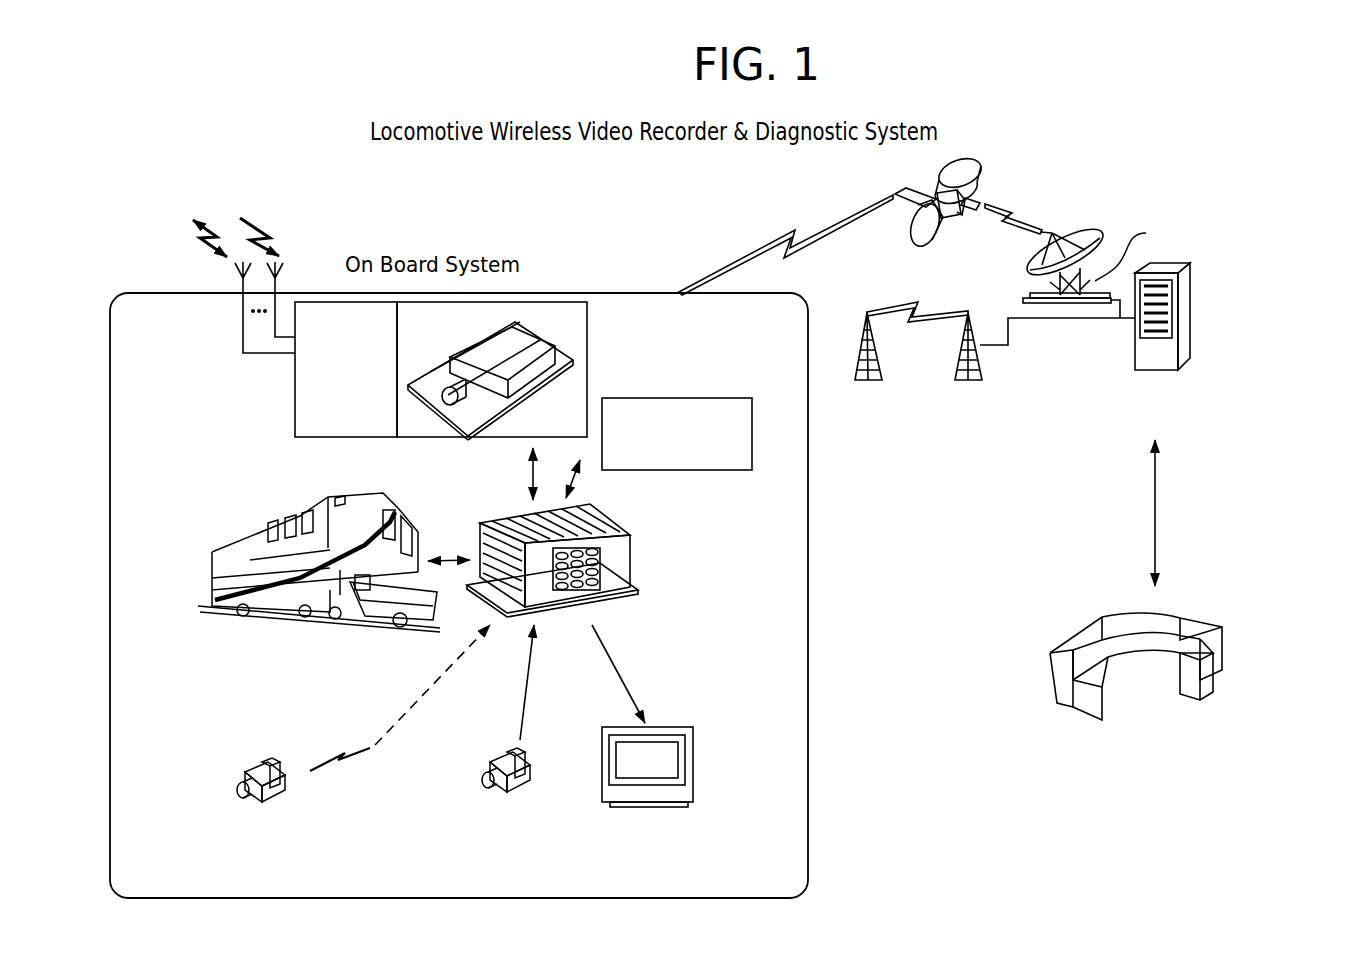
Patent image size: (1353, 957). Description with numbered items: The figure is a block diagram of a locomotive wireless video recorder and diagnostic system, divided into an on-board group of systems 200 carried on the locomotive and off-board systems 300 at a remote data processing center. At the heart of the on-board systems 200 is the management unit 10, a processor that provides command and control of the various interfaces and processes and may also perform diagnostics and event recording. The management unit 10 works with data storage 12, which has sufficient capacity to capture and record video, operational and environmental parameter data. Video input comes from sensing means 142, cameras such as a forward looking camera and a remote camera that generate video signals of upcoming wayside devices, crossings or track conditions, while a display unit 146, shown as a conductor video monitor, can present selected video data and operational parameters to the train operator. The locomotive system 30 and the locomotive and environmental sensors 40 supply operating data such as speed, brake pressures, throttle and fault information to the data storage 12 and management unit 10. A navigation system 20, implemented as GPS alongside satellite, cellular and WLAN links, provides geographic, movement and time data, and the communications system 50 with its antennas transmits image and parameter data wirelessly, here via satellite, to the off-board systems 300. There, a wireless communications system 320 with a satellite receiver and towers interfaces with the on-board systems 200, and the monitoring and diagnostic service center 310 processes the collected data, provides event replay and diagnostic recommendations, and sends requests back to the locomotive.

The management unit 10 is at (632, 579).
The data storage 12 is at (665, 399).
The navigation system 20 is at (587, 373).
The locomotive system 30 is at (284, 622).
The locomotive and environmental sensors 40 is at (212, 608).
The communications system 50 is at (295, 405).
The sensing means 142 is at (280, 788).
The display unit 146 is at (690, 807).
The on-board systems 200 is at (845, 531).
The off-board systems 300 is at (1236, 452).
The monitoring and diagnostic service center 310 is at (1158, 612).
The wireless communications system 320 is at (1010, 330).